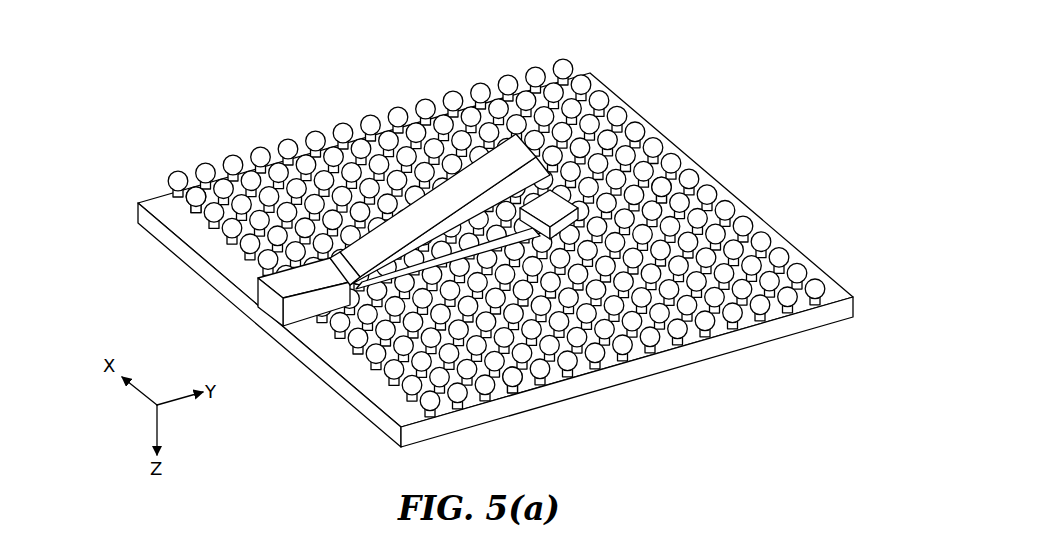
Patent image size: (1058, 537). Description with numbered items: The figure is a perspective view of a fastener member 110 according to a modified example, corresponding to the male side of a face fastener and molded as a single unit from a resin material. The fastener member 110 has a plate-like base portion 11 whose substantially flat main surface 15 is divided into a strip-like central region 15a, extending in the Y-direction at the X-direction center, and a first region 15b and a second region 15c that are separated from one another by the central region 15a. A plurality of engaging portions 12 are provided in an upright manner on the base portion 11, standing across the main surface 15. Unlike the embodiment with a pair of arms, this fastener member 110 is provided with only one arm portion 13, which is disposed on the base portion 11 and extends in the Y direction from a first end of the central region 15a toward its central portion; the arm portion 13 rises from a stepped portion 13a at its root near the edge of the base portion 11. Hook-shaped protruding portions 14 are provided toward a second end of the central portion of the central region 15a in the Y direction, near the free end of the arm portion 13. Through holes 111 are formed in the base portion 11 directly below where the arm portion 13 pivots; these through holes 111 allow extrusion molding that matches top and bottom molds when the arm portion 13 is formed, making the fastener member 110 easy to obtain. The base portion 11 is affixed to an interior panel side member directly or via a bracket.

The base portion 11 is at (327, 405).
The engaging portions 12 is at (472, 80).
The arm portion 13 is at (417, 210).
The step block 13a is at (303, 308).
The hook-shaped protruding portions 14 is at (585, 215).
The main surface 15 is at (504, 292).
The central region 15a is at (665, 193).
The first region 15b is at (210, 197).
The second region 15c is at (505, 388).
The fastener member 110 is at (763, 78).
The through holes 111 is at (470, 247).